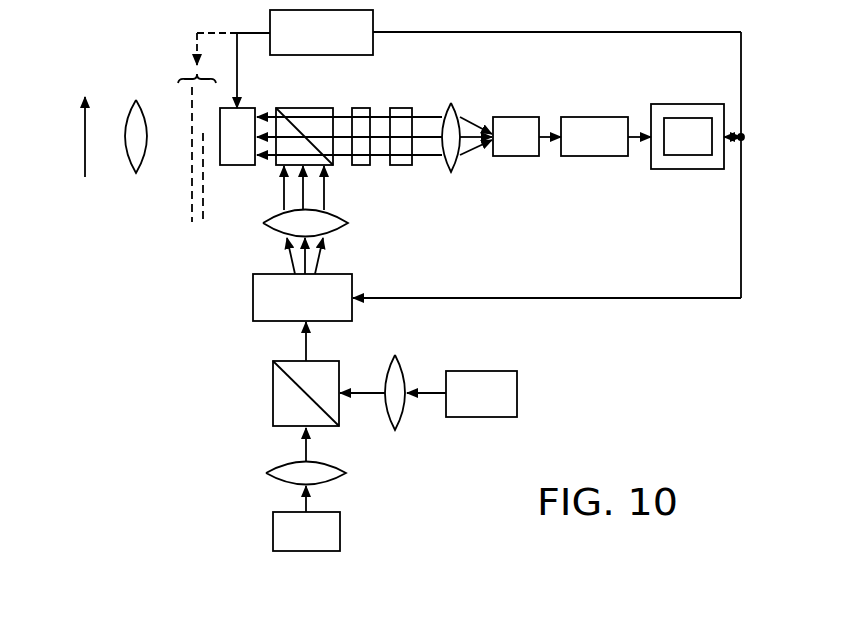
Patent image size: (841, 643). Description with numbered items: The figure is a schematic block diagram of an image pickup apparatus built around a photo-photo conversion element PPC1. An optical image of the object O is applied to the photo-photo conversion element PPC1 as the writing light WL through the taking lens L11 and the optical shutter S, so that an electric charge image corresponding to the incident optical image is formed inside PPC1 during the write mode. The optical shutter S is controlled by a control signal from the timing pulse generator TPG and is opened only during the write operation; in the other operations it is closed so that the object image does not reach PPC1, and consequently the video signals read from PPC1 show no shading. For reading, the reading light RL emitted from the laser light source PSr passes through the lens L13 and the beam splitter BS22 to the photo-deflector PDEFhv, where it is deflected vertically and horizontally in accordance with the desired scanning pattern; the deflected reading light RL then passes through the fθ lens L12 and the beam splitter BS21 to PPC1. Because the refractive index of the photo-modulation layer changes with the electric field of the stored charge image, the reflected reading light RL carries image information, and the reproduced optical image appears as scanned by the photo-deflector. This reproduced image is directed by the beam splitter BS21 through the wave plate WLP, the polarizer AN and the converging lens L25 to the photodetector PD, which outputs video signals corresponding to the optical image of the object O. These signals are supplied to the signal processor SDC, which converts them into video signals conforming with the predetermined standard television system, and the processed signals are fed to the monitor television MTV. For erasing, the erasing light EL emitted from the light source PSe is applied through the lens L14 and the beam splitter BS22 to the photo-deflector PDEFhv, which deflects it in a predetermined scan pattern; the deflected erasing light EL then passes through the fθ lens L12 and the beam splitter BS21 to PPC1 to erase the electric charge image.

The object O is at (85, 123).
The taking lens L11 is at (129, 117).
The writing light WL is at (175, 141).
The optical shutter S is at (184, 192).
The timing pulse generator TPG is at (321, 32).
The photo-photo conversion element PPC1 is at (237, 166).
The beam splitter BS21 is at (300, 108).
The wave plate WLP is at (362, 166).
The polarizer AN is at (401, 108).
The converging lens L25 is at (456, 106).
The photodetector PD is at (516, 136).
The signal processor SDC is at (594, 136).
The monitor television MTV is at (685, 103).
The fθ lens L12 is at (348, 223).
The photo-deflector PDEFhv is at (302, 297).
The beam splitter BS22 is at (276, 406).
The erasing light EL is at (427, 383).
The light source for erasing light PSe is at (481, 394).
The lens L14 is at (402, 424).
The lens L13 is at (266, 467).
The reading light RL is at (293, 493).
The light source for reading light PSr is at (306, 531).